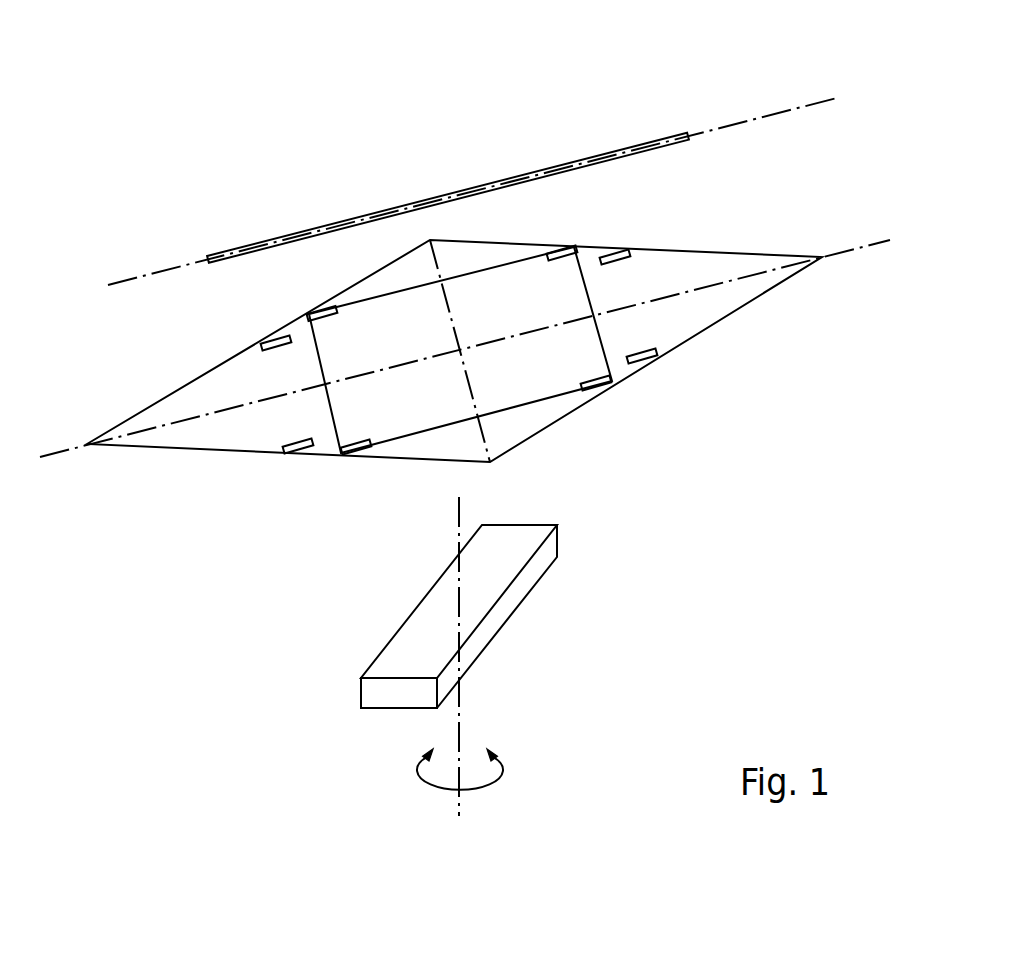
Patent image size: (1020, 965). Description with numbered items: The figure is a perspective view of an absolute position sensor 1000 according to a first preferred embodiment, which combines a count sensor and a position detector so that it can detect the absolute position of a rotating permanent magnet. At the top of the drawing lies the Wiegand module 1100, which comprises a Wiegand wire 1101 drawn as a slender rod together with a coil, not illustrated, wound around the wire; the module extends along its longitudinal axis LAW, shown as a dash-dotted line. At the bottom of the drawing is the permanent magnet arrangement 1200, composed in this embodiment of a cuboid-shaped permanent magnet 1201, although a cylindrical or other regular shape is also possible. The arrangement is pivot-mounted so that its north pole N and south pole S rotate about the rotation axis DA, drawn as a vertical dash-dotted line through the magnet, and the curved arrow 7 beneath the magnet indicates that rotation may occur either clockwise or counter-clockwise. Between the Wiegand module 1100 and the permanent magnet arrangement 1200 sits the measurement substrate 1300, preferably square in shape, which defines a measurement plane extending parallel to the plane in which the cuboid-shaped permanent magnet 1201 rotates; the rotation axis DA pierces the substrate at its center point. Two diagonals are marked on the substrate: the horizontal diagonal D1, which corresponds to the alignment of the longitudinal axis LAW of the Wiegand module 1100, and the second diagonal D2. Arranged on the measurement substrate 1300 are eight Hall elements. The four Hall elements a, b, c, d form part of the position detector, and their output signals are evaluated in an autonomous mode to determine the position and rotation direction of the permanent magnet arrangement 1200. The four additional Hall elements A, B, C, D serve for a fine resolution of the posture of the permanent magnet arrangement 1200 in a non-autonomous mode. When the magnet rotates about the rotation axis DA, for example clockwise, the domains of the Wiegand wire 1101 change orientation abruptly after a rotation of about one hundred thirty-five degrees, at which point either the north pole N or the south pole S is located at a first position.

The absolute position sensor 1000 is at (663, 28).
The Wiegand module 1100 is at (448, 169).
The Wiegand wire 1101 is at (543, 167).
The longitudinal axis of the Wiegand module LAW is at (746, 120).
The measurement substrate 1300 is at (686, 378).
The horizontal diagonal D1 is at (843, 250).
The diagonal D2 is at (483, 438).
The rotation axis DA is at (458, 348).
The Hall element A is at (333, 321).
The Hall element B is at (554, 266).
The Hall element C is at (586, 377).
The Hall element D is at (367, 434).
The Hall element a is at (269, 356).
The Hall element b is at (625, 265).
The Hall element c is at (645, 343).
The Hall element d is at (290, 442).
The permanent magnet arrangement 1200 is at (524, 614).
The cuboid-shaped permanent magnet 1201 is at (558, 542).
The north pole N is at (536, 500).
The south pole S is at (394, 729).
The rotation direction 7 is at (459, 709).